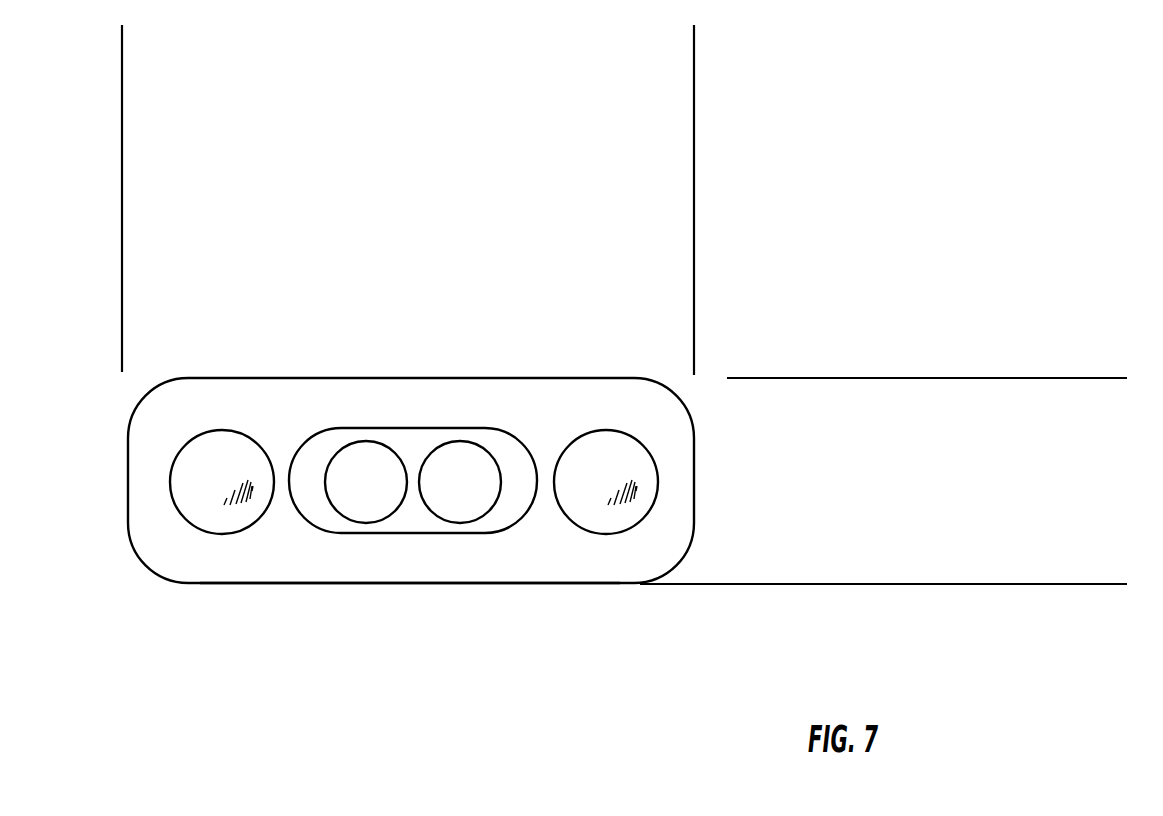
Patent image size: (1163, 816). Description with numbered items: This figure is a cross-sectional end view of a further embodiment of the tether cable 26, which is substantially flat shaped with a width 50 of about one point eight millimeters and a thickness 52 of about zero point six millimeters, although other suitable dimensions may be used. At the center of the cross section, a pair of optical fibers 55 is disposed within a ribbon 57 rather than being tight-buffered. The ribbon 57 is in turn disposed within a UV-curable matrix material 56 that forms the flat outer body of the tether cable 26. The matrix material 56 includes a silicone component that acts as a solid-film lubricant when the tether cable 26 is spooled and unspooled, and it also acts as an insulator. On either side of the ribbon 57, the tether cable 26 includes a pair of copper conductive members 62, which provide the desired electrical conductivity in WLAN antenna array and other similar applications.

The tether cable 26 is at (557, 378).
The width 50 is at (676, 72).
The thickness 52 is at (1080, 259).
The optical fibers 55 is at (366, 441).
The matrix material 56 is at (510, 583).
The ribbon 57 is at (339, 533).
The copper conductive members 62 is at (222, 430).